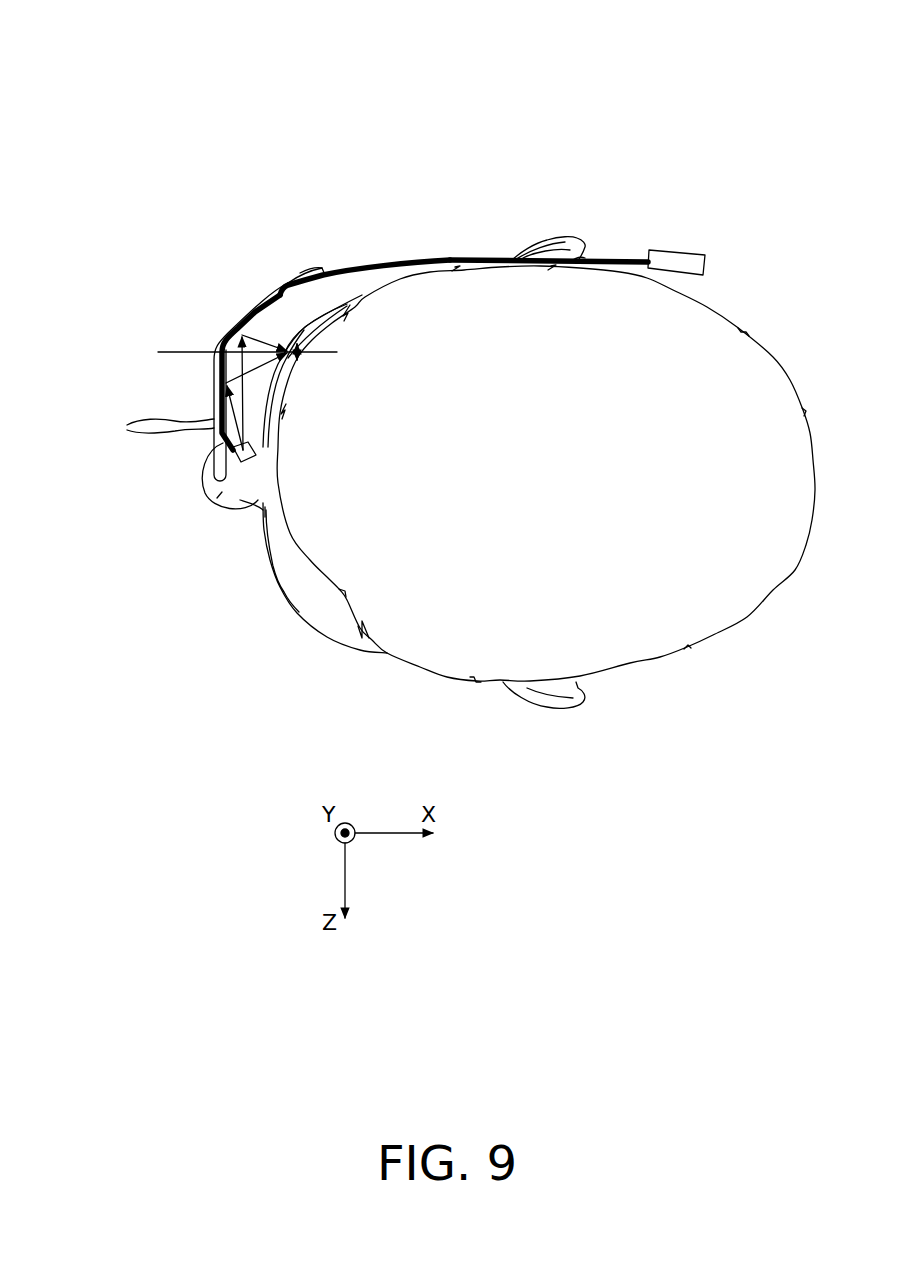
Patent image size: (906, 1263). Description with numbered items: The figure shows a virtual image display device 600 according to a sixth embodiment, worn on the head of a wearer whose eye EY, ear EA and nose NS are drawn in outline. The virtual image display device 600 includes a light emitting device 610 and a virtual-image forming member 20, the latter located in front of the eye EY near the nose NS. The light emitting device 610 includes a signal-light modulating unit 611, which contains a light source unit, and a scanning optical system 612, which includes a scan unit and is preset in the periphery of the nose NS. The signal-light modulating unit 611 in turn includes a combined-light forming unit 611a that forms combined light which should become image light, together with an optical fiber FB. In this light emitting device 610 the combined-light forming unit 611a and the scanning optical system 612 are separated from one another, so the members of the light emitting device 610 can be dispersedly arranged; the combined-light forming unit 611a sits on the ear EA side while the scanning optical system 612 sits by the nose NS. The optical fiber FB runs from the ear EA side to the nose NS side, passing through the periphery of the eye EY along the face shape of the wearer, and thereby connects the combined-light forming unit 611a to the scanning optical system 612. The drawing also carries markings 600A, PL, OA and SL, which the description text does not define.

The virtual image display device 600 is at (345, 78).
The display device front portion 600A is at (310, 260).
The light emitting device 610 is at (480, 171).
The signal-light modulating unit 611 is at (630, 171).
The combined-light forming unit 611a is at (682, 257).
The scanning optical system 612 is at (238, 463).
The virtual-image forming member 20 is at (219, 348).
The eye EY is at (296, 346).
The ear EA is at (552, 238).
The optical fiber FB is at (597, 253).
The image light path PL is at (255, 368).
The optical axis OA is at (177, 352).
The signal line SL is at (153, 433).
The nose NS is at (223, 490).